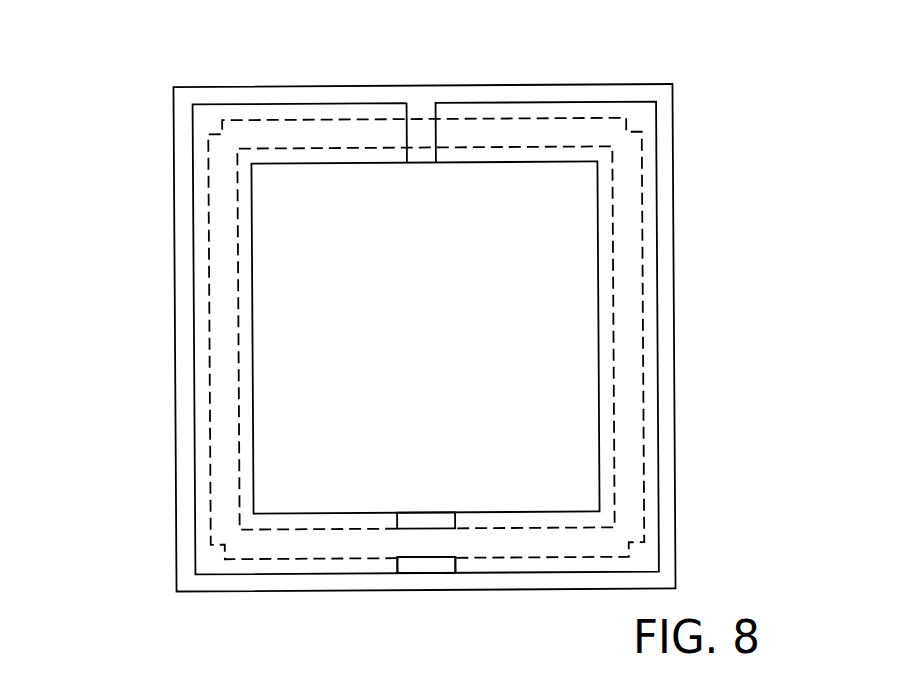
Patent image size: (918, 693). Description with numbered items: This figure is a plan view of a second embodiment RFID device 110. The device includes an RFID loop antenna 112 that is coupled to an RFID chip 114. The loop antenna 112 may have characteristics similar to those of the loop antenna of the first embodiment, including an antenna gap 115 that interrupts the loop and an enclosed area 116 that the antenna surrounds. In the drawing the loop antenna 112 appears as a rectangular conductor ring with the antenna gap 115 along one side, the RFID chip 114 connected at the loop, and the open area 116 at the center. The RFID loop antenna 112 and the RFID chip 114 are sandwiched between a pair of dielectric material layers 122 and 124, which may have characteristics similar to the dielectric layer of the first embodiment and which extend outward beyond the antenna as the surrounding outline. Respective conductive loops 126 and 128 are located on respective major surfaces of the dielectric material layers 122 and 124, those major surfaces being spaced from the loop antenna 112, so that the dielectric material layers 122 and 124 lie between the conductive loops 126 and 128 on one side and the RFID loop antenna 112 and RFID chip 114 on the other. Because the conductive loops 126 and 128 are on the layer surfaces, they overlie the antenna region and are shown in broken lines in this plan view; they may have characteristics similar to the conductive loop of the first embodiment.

The RFID device 110 is at (442, 351).
The RFID loop antenna 112 is at (633, 204).
The RFID chip 114 is at (418, 573).
The antenna gap 115 is at (432, 578).
The area 116 is at (444, 340).
The dielectric material layer 122 is at (359, 368).
The dielectric material layer 124 is at (178, 550).
The conductive loop 126 is at (518, 313).
The conductive loop 128 is at (658, 122).